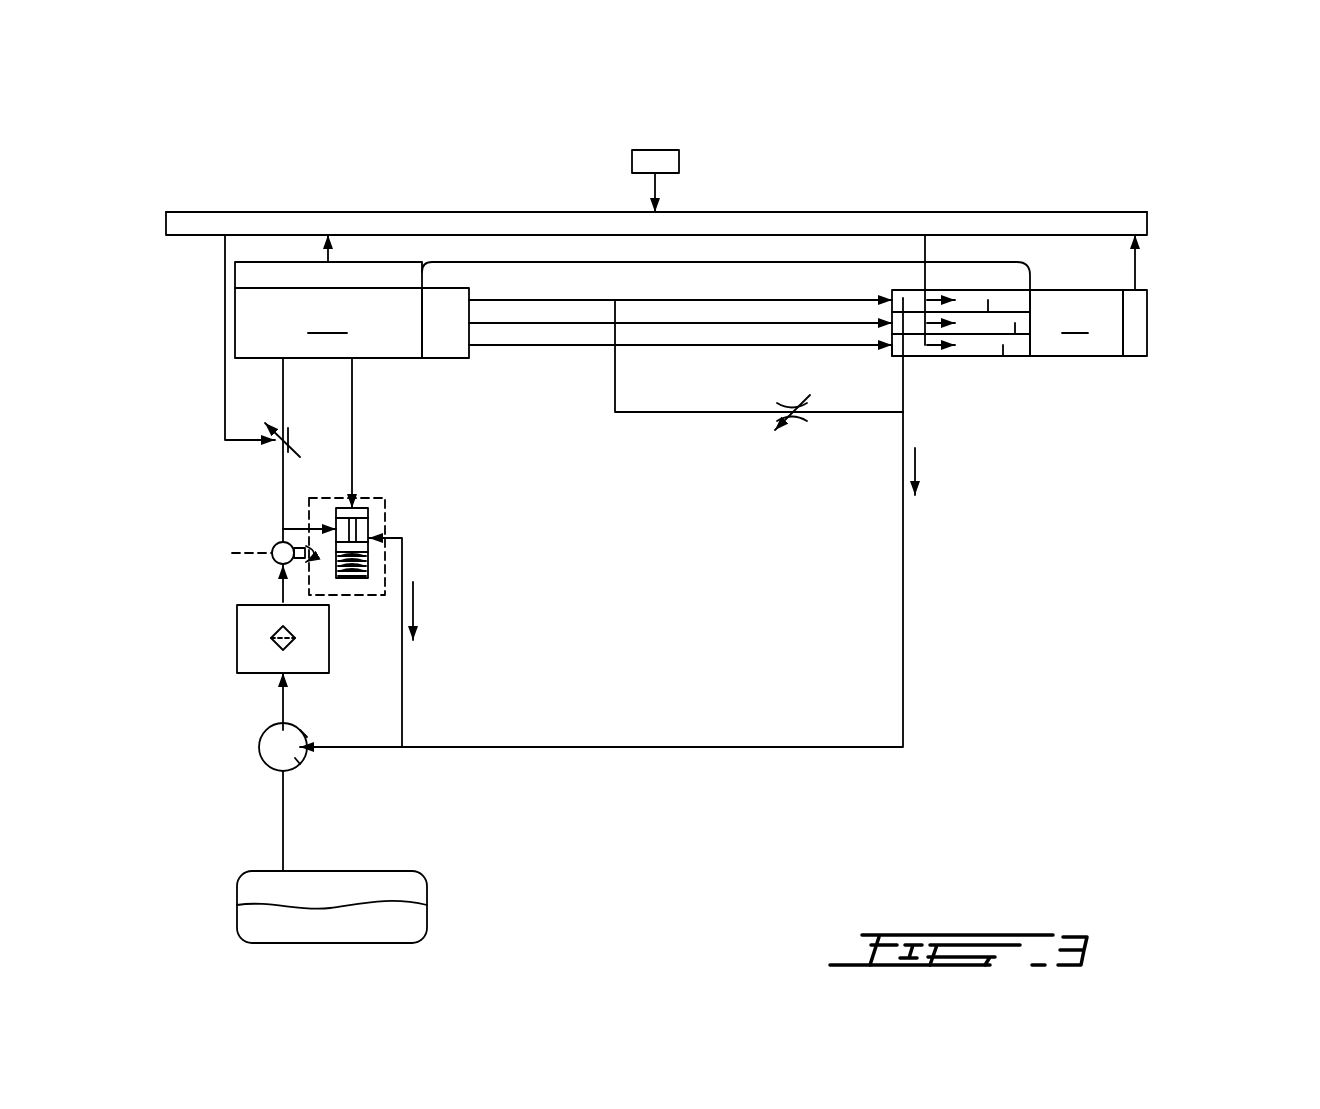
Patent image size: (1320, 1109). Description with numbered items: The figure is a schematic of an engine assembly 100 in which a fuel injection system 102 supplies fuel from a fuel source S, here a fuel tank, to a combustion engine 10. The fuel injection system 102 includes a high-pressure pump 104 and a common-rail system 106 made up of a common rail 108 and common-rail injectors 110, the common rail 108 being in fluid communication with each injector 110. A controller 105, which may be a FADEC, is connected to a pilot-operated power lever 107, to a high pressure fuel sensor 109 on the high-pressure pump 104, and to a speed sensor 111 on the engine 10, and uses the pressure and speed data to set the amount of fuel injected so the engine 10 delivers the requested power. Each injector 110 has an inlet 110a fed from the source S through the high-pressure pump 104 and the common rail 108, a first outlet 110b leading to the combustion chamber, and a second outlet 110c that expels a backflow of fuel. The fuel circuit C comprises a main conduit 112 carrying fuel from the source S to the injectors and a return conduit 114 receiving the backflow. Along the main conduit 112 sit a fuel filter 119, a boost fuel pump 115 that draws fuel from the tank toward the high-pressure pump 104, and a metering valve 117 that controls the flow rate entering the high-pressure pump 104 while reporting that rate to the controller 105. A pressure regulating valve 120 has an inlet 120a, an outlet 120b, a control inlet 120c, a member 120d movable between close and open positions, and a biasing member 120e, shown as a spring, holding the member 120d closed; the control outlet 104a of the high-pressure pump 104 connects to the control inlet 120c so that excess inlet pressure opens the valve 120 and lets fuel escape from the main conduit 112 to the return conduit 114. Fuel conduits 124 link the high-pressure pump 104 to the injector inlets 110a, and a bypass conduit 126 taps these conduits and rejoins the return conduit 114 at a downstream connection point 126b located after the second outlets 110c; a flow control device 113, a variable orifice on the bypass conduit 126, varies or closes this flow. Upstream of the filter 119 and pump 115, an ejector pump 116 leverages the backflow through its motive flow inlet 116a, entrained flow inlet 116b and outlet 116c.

The engine assembly 100 is at (1172, 195).
The fuel injection system 102 is at (417, 188).
The high-pressure pump 104 is at (328, 323).
The control outlet 104a is at (364, 368).
The controller 105 is at (782, 212).
The common-rail system 106 is at (727, 262).
The power lever 107 is at (655, 150).
The common rail 108 is at (470, 358).
The high pressure fuel sensor 109 is at (245, 275).
The combustion engine 10 is at (1082, 295).
The common-rail injectors 110 is at (988, 300).
The inlet 110a is at (892, 352).
The first outlet 110b is at (1030, 300).
The second outlet 110c is at (903, 357).
The speed sensor 111 is at (1150, 323).
The main conduit 112 is at (283, 705).
The flow control device 113 is at (792, 425).
The return conduit 114 is at (905, 633).
The fuel pump 115 is at (283, 541).
The ejector pump 116 is at (262, 765).
The motive flow inlet 116a is at (308, 735).
The entrained flow inlet 116b is at (295, 757).
The outlet 116c is at (283, 723).
The metering valve 117 is at (265, 455).
The fuel filter 119 is at (237, 638).
The pressure regulating valve 120 is at (385, 560).
The inlet 120a is at (333, 522).
The outlet 120b is at (372, 532).
The control inlet 120c is at (365, 495).
The member 120d is at (372, 520).
The biasing member 120e is at (352, 578).
The fuel conduits 124 is at (820, 300).
The bypass conduit 126 is at (665, 412).
The downstream connection point 126b is at (616, 345).
The fuel source S is at (420, 890).
The fuel circuit C is at (660, 780).